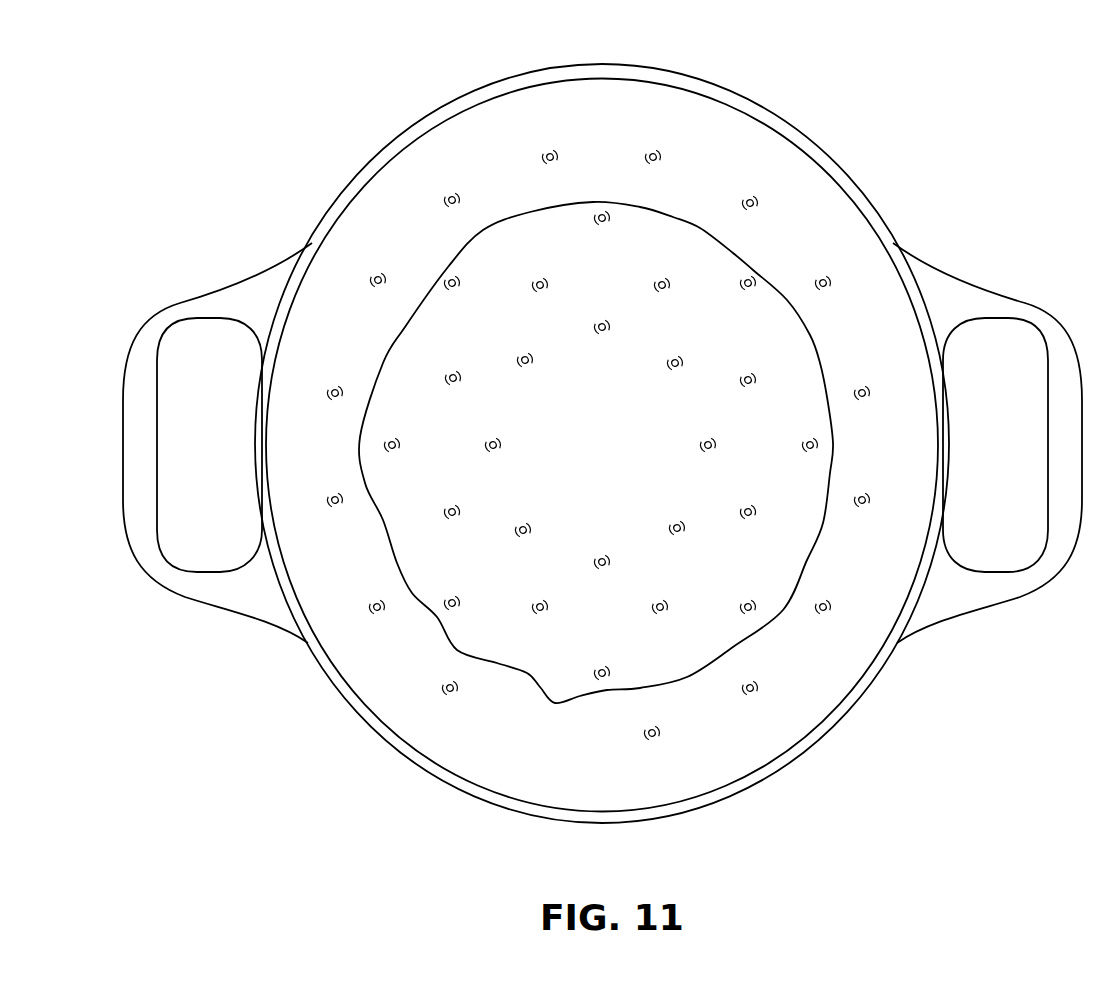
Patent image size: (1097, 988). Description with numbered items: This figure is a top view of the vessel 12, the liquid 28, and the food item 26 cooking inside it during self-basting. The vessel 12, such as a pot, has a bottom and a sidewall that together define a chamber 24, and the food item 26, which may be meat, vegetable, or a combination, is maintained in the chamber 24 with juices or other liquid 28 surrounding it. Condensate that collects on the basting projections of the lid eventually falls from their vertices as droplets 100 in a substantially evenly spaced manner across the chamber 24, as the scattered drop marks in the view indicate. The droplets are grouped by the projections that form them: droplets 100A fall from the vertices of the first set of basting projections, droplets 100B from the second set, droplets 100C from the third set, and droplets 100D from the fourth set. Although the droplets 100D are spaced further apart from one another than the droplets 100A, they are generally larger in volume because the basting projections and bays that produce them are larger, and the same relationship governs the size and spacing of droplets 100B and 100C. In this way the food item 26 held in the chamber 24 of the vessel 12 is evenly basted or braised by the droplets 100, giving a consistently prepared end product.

The vessel 12 is at (371, 156).
The chamber 24 is at (807, 752).
The food item 26 is at (773, 313).
The liquid 28 is at (773, 150).
The droplets 100 is at (655, 147).
The droplets 100A is at (597, 572).
The droplets 100B is at (533, 615).
The droplets 100C is at (440, 612).
The droplets 100D is at (370, 613).